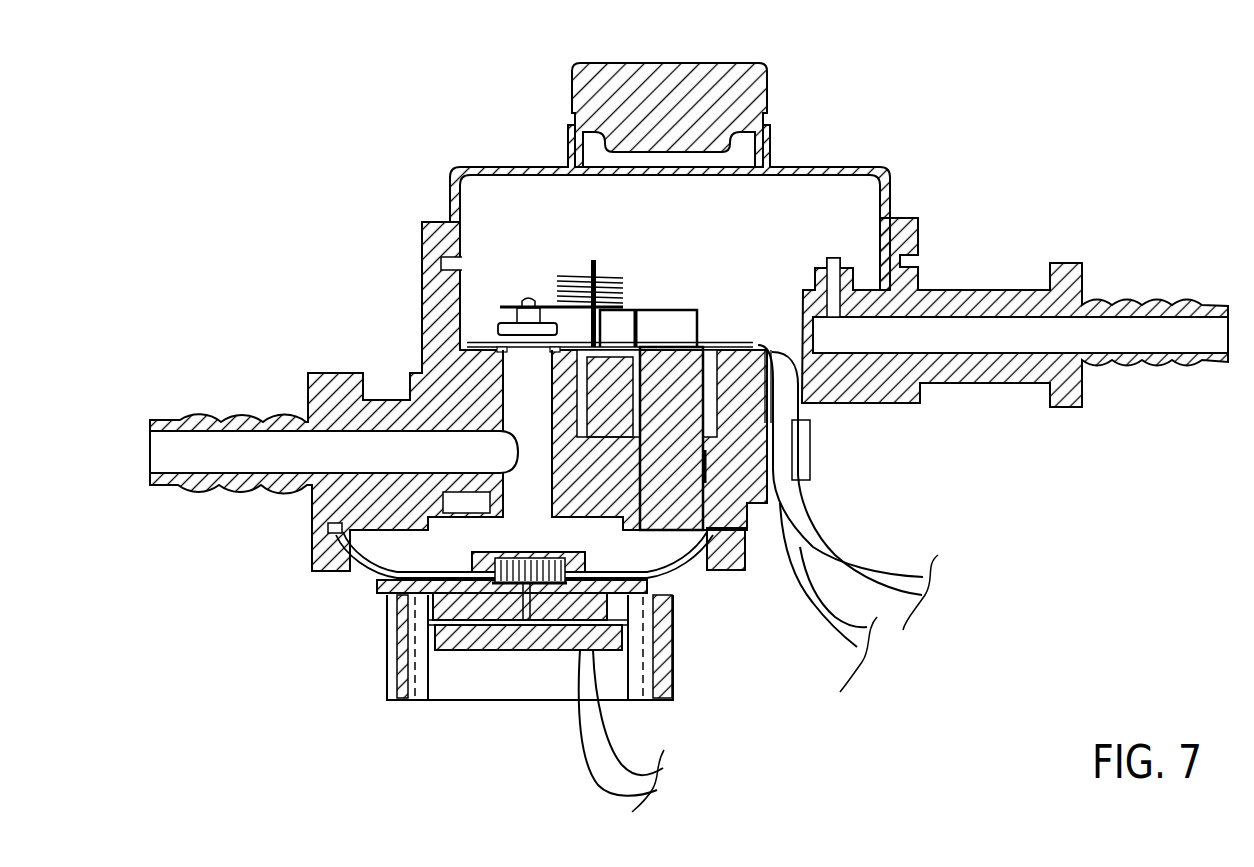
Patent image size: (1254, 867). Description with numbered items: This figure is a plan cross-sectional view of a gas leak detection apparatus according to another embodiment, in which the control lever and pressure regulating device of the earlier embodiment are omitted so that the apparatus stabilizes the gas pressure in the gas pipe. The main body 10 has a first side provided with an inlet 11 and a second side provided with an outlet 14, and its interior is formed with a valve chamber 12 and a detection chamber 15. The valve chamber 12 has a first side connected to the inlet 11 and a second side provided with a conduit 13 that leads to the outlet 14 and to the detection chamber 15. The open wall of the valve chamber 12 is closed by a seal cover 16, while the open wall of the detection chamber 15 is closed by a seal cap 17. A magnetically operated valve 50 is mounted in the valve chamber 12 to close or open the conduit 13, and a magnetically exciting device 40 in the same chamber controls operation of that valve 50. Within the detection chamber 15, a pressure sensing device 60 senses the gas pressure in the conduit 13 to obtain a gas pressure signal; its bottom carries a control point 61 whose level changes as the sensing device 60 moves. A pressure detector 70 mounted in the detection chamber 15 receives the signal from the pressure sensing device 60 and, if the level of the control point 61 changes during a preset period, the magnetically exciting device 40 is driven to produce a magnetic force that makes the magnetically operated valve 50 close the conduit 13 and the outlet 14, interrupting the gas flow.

The main body 10 is at (303, 372).
The inlet 11 is at (860, 333).
The valve chamber 12 is at (492, 212).
The conduit 13 is at (518, 392).
The outlet 14 is at (213, 447).
The detection chamber 15 is at (430, 560).
The seal cover 16 is at (738, 90).
The seal cap 17 is at (683, 597).
The magnetically exciting device 40 is at (750, 414).
The magnetically operated valve 50 is at (506, 300).
The pressure sensing device 60 is at (368, 568).
The control point 61 is at (533, 592).
The pressure detector 70 is at (547, 658).